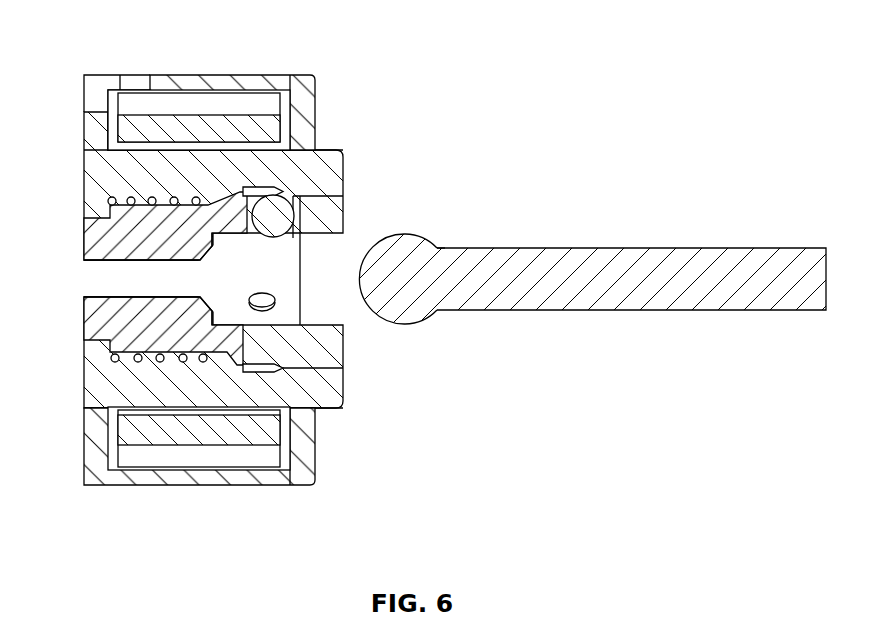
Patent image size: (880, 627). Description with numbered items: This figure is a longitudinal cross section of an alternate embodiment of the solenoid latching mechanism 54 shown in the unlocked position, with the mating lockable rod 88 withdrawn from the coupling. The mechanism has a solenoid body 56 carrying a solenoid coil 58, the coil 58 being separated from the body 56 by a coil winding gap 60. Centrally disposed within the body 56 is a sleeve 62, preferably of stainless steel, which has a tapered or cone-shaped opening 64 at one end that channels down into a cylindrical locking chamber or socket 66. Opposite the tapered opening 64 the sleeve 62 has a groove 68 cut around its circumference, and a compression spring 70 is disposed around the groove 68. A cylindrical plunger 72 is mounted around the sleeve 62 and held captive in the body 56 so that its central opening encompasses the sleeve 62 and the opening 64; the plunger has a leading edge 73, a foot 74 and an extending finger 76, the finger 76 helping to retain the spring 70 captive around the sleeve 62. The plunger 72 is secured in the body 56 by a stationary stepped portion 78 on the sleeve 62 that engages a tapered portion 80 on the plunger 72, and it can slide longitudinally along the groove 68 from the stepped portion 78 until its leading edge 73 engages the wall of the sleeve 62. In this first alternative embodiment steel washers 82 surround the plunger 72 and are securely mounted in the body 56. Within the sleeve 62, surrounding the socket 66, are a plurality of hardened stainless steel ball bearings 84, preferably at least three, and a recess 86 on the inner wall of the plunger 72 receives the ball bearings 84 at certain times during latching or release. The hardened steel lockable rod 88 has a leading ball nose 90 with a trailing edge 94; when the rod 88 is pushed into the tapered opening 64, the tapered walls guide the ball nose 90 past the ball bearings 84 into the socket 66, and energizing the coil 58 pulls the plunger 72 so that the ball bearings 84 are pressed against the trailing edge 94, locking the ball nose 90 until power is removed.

The solenoid latching mechanism 54 is at (350, 55).
The solenoid body 56 is at (165, 80).
The solenoid coil 58 is at (122, 125).
The coil winding gap 60 is at (210, 100).
The sleeve 62 is at (100, 249).
The tapered opening 64 is at (335, 218).
The locking chamber or socket 66 is at (288, 302).
The groove 68 is at (112, 373).
The compression spring 70 is at (145, 372).
The plunger 72 is at (330, 175).
The leading edge 73 is at (198, 185).
The foot 74 is at (218, 190).
The extending finger 76 is at (160, 197).
The stationary stepped portion 78 is at (276, 408).
The tapered portion 80 is at (255, 160).
The steel washers 82 is at (302, 123).
The ball bearings 84 is at (258, 240).
The recess 86 is at (282, 376).
The lockable rod 88 is at (648, 265).
The ball nose 90 is at (415, 312).
The trailing edge 94 is at (432, 247).